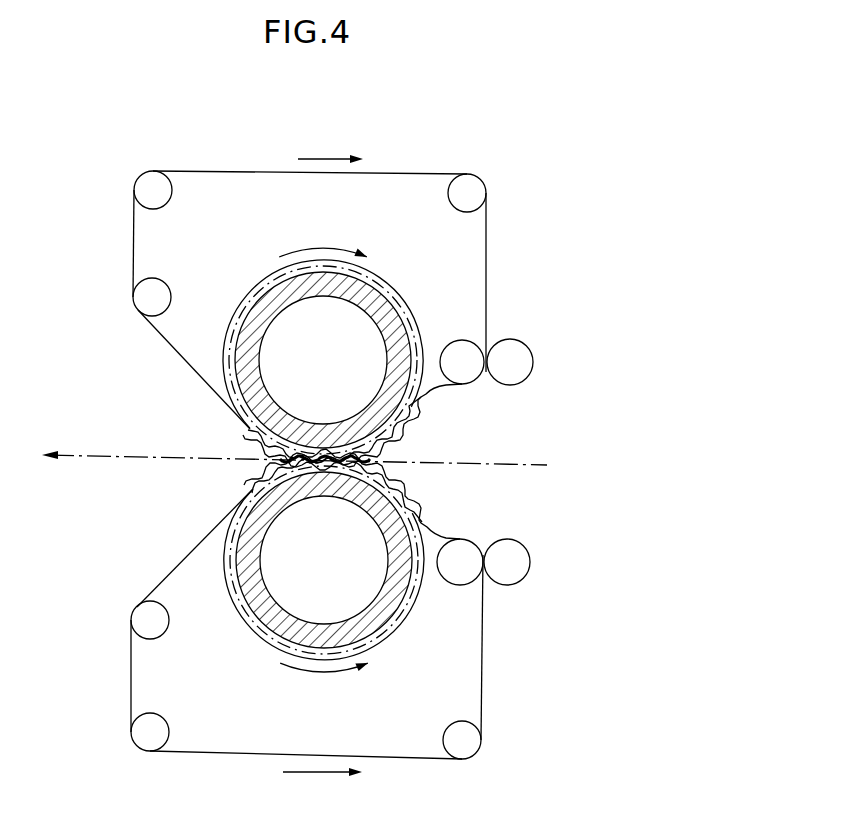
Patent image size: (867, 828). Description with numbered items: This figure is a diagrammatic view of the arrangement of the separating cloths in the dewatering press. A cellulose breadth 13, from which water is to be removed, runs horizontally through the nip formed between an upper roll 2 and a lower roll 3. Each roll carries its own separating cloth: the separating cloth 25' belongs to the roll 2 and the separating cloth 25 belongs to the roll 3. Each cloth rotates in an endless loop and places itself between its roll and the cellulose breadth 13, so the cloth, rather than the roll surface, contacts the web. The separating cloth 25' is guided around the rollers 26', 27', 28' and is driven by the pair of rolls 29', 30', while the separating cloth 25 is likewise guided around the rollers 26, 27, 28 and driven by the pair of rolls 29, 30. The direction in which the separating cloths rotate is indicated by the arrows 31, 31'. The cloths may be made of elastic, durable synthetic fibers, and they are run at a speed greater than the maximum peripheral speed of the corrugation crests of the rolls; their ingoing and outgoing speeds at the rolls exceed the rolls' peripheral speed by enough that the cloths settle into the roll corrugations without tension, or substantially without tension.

The roll 2 is at (277, 293).
The roll 3 is at (267, 620).
The cellulose breadth 13 is at (505, 464).
The separating cloth 25 is at (286, 604).
The separating cloth 25' is at (286, 320).
The roller 26 is at (131, 613).
The roller 26' is at (132, 311).
The roller 27 is at (142, 754).
The roller 27' is at (129, 190).
The roller 28 is at (485, 749).
The roller 28' is at (493, 188).
The roll 29 is at (461, 541).
The roll 29' is at (460, 346).
The roll 30 is at (522, 548).
The roll 30' is at (528, 350).
The arrow 31 is at (322, 792).
The arrow 31' is at (330, 140).